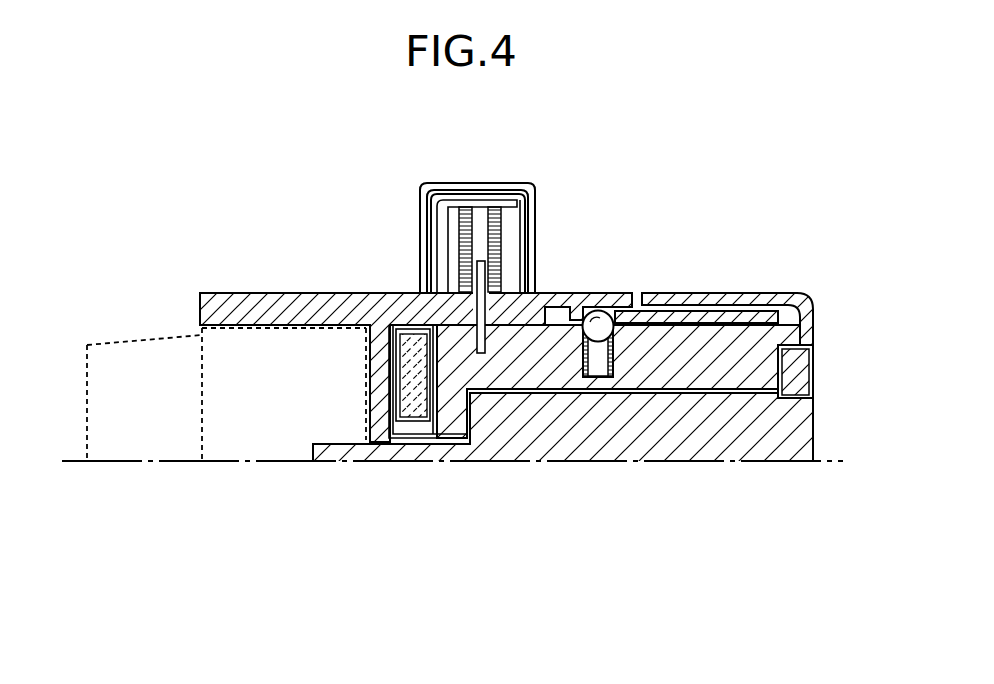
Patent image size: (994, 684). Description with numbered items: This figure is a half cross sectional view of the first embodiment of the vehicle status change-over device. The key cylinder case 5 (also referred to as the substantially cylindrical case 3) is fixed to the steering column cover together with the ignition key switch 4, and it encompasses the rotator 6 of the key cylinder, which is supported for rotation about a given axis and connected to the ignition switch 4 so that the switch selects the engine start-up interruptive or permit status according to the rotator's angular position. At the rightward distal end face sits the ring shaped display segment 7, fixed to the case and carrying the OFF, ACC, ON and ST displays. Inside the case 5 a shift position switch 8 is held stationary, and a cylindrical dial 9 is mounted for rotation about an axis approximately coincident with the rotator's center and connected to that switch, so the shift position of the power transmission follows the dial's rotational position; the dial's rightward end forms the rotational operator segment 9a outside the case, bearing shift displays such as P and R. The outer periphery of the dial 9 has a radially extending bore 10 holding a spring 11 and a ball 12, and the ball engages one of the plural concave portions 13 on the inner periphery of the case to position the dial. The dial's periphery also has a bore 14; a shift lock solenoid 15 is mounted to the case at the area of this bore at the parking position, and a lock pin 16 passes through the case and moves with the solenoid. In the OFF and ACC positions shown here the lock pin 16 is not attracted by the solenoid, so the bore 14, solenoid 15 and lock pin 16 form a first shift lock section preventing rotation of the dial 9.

The key cylinder case 3 is at (242, 288).
The ignition key switch 4 is at (170, 455).
The key cylinder case 5 is at (318, 300).
The rotator 6 is at (745, 456).
The display segment 7 is at (803, 368).
The shift position switch 8 is at (402, 337).
The dial 9 is at (705, 337).
The rotational operator segment 9a is at (743, 297).
The bore 10 is at (582, 366).
The spring 11 is at (615, 364).
The ball 12 is at (582, 322).
The concave portions 13 is at (601, 316).
The bore 14 is at (472, 345).
The shift lock solenoid 15 is at (491, 207).
The lock pin 16 is at (486, 268).